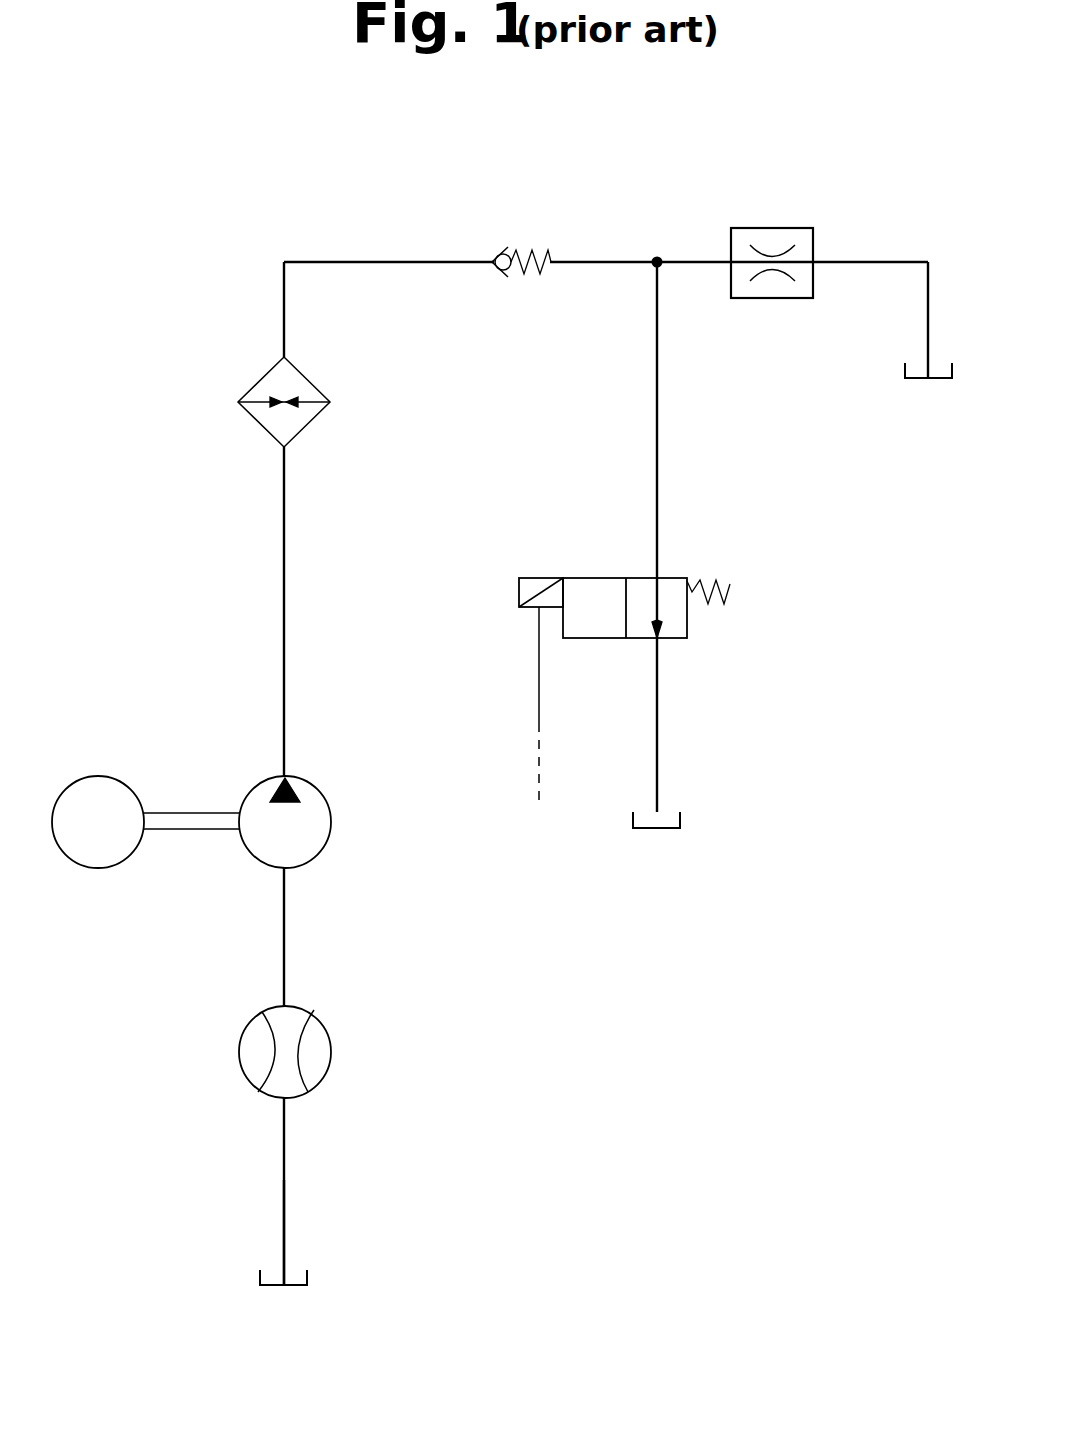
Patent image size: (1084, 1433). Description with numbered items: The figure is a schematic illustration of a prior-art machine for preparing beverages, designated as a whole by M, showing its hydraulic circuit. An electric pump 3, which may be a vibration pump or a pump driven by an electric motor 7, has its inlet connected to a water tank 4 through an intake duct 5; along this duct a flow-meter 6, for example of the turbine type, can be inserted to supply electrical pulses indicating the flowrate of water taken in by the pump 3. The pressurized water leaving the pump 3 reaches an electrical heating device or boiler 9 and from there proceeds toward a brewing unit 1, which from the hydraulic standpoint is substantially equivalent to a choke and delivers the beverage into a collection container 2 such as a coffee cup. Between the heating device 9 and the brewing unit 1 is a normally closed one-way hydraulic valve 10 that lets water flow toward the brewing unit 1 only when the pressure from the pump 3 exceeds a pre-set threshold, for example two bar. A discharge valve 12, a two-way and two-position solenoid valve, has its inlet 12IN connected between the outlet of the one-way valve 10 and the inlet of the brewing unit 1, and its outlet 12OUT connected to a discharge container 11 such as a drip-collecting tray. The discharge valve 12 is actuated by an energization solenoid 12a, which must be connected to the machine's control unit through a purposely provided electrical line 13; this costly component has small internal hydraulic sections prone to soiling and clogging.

The machine for preparing beverages M is at (185, 298).
The brewing unit 1 is at (770, 228).
The collection container 2 is at (916, 380).
The electric pump 3 is at (300, 845).
The water tank 4 is at (293, 1288).
The intake duct 5 is at (285, 1232).
The flow-meter 6 is at (313, 1050).
The electric motor 7 is at (108, 846).
The electrical heating device or boiler 9 is at (262, 414).
The one-way hydraulic valve 10 is at (520, 250).
The discharge container 11 is at (665, 830).
The discharge valve 12 is at (597, 565).
The energization solenoid 12a is at (519, 605).
The inlet of the discharge valve 12IN is at (657, 578).
The outlet of the discharge valve 12OUT is at (658, 640).
The electrical line 13 is at (539, 711).